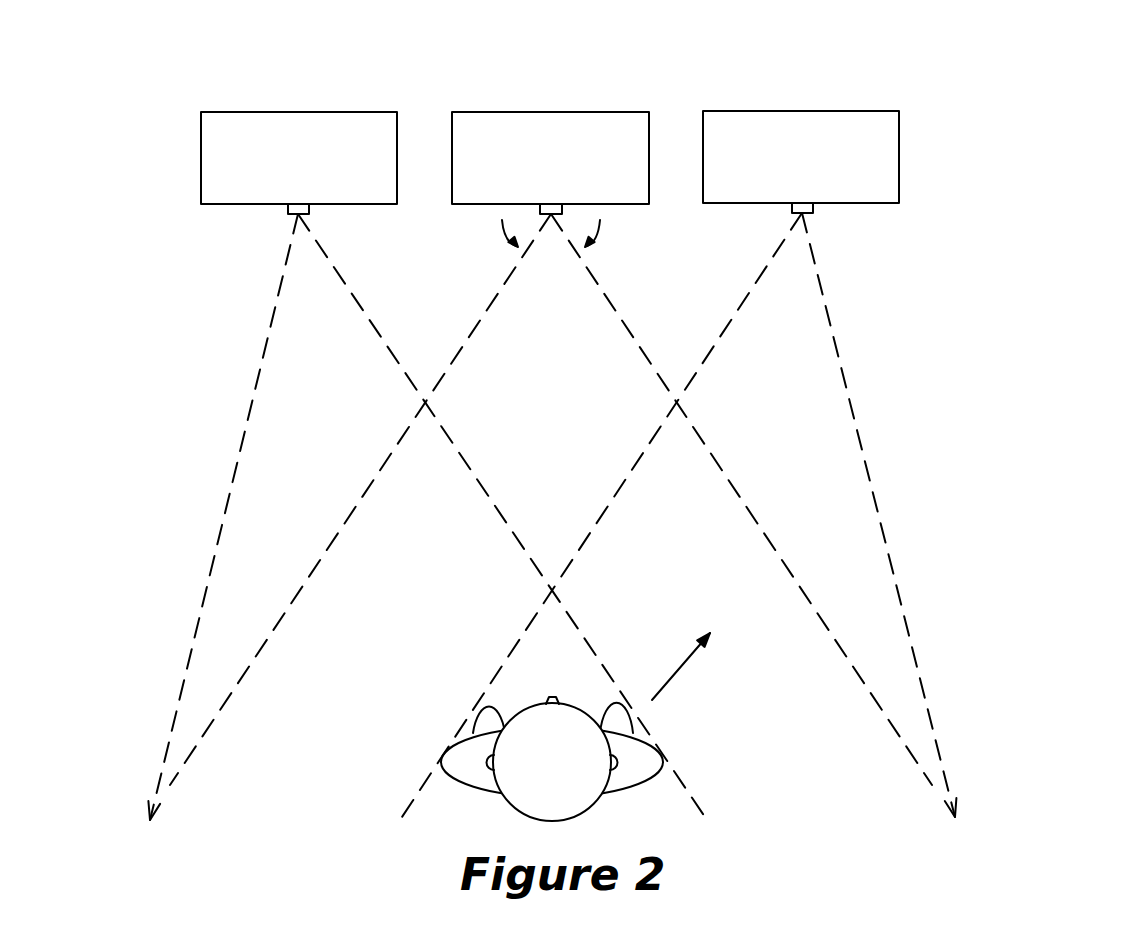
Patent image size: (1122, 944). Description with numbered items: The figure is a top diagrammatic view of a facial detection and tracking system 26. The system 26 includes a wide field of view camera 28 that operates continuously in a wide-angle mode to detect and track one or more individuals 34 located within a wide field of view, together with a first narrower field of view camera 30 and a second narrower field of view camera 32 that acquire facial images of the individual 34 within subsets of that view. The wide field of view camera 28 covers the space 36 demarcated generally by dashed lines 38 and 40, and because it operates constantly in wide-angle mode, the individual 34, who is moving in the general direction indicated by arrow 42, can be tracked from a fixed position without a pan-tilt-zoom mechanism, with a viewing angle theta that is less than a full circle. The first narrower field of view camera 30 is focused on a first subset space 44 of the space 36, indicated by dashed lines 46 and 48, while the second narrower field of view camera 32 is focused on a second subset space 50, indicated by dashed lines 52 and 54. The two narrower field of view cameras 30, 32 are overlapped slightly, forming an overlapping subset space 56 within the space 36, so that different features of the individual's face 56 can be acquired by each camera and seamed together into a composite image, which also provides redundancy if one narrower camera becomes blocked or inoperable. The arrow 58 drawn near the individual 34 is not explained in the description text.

The facial detection and tracking system 26 is at (1013, 303).
The wide field of view camera 28 is at (613, 125).
The first narrower field of view camera 30 is at (363, 125).
The second narrower field of view camera 32 is at (865, 125).
The individual 34 is at (610, 742).
The space 36 is at (565, 320).
The dashed line 38 is at (450, 360).
The dashed line 40 is at (645, 362).
The arrow 42 is at (677, 675).
The first subset space 44 is at (305, 287).
The dashed line 46 is at (279, 288).
The dashed line 48 is at (365, 315).
The second subset space 50 is at (790, 338).
The dashed line 52 is at (705, 360).
The dashed line 54 is at (850, 395).
The overlapping subset space 56 is at (530, 707).
The line of sight 58 is at (560, 668).